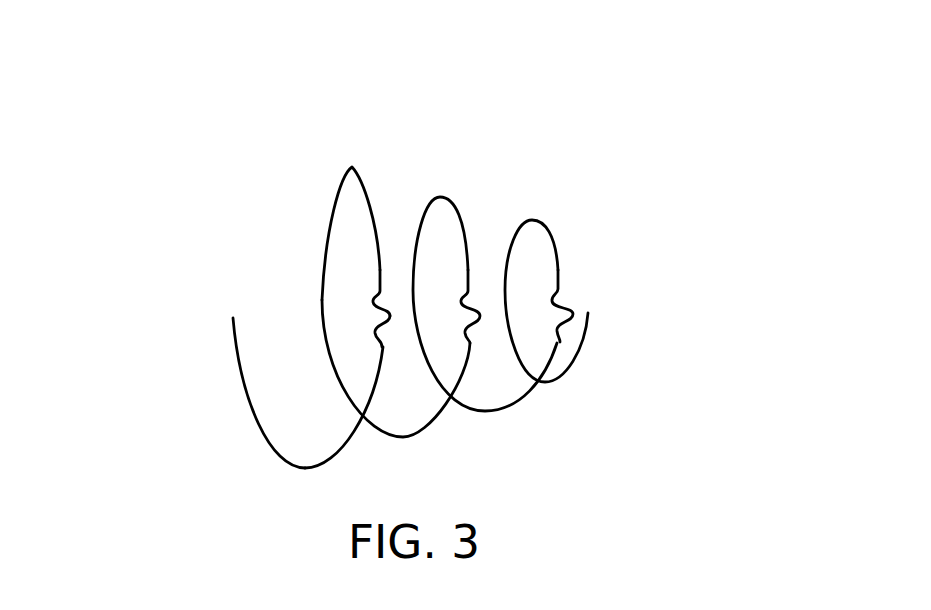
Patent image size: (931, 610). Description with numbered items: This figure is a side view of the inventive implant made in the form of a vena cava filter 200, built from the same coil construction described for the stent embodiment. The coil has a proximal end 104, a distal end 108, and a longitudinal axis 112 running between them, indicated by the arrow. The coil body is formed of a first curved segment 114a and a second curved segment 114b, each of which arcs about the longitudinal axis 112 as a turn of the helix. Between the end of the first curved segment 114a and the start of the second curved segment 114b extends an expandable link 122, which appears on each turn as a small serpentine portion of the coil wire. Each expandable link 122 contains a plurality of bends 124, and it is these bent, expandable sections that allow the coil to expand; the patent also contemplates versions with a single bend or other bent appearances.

The vena cava filter 200 is at (568, 137).
The proximal end 104 is at (227, 413).
The distal end 108 is at (603, 365).
The longitudinal axis 112 is at (618, 314).
The first curved segment 114a is at (303, 464).
The second curved segment 114b is at (351, 167).
The expandable link 122 is at (373, 299).
The bends 124 is at (382, 347).